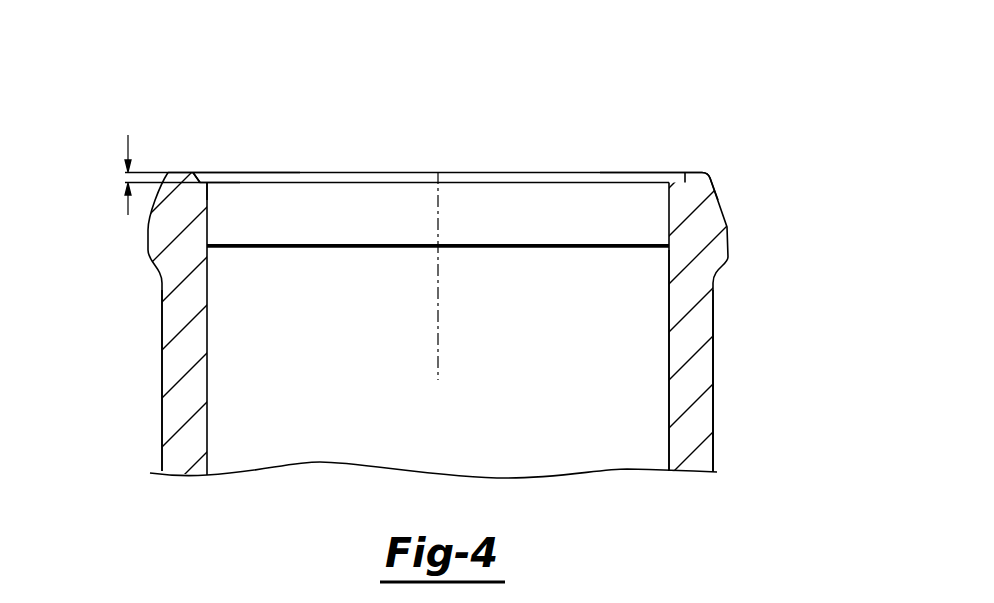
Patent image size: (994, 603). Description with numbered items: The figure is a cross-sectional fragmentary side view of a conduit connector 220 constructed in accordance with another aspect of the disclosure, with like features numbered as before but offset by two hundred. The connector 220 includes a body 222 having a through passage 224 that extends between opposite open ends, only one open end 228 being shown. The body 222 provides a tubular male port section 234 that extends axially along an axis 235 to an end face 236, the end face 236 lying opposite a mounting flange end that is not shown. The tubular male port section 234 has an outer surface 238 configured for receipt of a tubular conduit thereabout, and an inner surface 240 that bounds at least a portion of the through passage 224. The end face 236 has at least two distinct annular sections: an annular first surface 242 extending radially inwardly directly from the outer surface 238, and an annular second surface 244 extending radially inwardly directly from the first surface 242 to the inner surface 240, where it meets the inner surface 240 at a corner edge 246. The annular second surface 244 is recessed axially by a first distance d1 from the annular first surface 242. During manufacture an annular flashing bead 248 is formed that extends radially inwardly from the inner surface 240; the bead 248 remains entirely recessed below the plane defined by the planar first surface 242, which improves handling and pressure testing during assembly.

The connector 220 is at (748, 207).
The body 222 is at (708, 316).
The through passage 224 is at (468, 234).
The open end 228 is at (690, 171).
The tubular male port section 234 is at (152, 345).
The axis 235 is at (437, 338).
The end face 236 is at (679, 163).
The outer surface 238 is at (725, 427).
The inner surface 240 is at (658, 427).
The annular first surface 242 is at (183, 162).
The annular second surface 244 is at (204, 163).
The corner edge 246 is at (210, 183).
The bead 248 is at (360, 244).
The first distance d1 is at (126, 210).